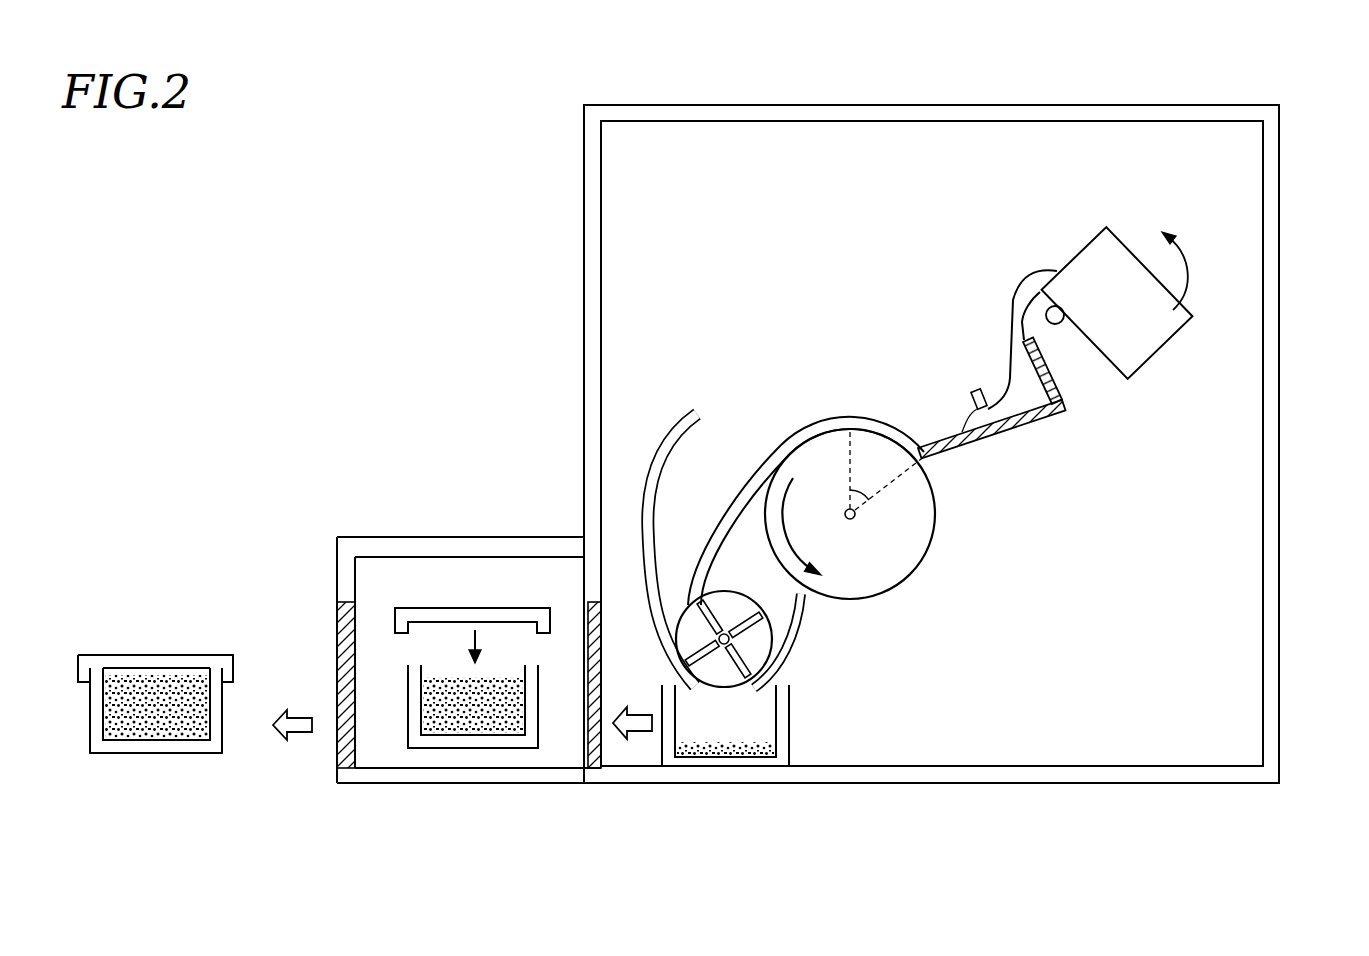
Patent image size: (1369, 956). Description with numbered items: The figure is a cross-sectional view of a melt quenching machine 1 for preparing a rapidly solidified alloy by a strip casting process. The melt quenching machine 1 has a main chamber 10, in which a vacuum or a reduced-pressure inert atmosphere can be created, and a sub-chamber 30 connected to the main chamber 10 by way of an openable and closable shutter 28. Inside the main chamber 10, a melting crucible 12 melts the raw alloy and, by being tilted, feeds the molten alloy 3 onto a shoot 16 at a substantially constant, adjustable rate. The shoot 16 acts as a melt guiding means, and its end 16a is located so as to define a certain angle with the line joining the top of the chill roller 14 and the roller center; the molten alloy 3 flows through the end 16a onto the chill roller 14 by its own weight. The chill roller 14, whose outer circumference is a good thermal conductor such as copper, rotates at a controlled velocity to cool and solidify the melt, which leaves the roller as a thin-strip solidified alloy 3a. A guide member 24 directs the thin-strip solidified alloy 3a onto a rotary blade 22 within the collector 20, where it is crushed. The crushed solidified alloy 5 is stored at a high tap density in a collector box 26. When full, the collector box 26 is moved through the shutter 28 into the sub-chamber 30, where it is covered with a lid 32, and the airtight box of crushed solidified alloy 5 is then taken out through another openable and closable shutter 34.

The melt quenching machine 1 is at (431, 216).
The molten alloy 3 is at (1017, 380).
The thin-strip solidified alloy 3a is at (703, 535).
The crushed solidified alloy 5 is at (760, 758).
The main chamber 10 is at (830, 104).
The melting crucible 12 is at (1168, 333).
The chill roller 14 is at (888, 582).
The shoot 16 is at (1028, 425).
The end of the shoot 16a is at (950, 458).
The collector 20 is at (704, 472).
The rotary blade 22 is at (712, 672).
The guide member 24 is at (673, 437).
The collector box 26 is at (738, 765).
The shutter 28 is at (590, 728).
The sub-chamber 30 is at (468, 545).
The lid 32 is at (393, 603).
The shutter 34 is at (337, 652).